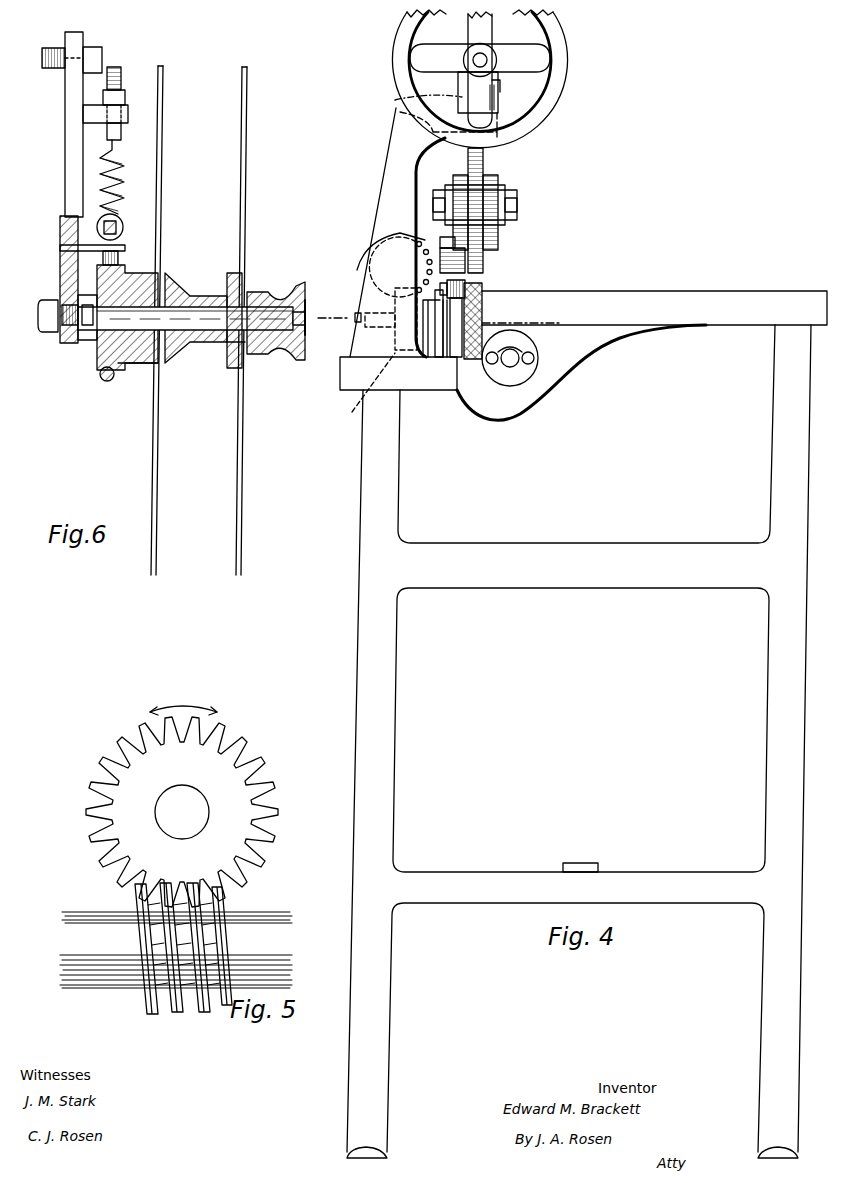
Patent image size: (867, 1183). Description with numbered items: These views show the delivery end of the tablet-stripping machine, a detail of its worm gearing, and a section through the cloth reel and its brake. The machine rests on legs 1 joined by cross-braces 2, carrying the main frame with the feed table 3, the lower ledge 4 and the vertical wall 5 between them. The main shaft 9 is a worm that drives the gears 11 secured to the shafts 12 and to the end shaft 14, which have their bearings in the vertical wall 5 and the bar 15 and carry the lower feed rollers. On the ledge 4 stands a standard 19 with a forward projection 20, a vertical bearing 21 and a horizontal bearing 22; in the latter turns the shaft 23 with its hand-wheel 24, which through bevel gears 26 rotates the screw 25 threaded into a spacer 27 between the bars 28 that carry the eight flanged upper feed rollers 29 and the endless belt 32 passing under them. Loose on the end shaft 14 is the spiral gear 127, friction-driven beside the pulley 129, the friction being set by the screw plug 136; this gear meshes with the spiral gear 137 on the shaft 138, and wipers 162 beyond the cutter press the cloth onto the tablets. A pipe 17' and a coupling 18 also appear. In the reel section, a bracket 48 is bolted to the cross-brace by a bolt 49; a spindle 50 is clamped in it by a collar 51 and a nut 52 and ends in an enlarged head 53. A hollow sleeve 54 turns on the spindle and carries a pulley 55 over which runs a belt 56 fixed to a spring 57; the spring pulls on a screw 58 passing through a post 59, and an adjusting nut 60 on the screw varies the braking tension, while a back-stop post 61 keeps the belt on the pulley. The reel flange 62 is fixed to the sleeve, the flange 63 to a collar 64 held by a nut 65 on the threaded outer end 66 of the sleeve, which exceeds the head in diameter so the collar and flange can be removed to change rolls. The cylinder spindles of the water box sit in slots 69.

In FIG. 4, the legs 1 is at (579, 741).
In FIG. 4, the cross-braces 2 is at (581, 738).
In FIG. 4, the feed table 3 is at (654, 298).
In FIG. 4, the ledge 4 is at (346, 357).
In FIG. 4, the vertical wall 5 is at (484, 296).
In FIG. 4, the main shaft 9 is at (518, 365).
In FIG. 5, the gears 11 is at (255, 870).
In FIG. 5, the shafts 12 is at (209, 818).
In FIG. 4, the end shaft 14 is at (440, 358).
In FIG. 4, the bar 15 is at (457, 360).
In FIG. 4, the pipe 17' is at (460, 315).
In FIG. 4, the coupling 18 is at (480, 285).
In FIG. 4, the standards 19 is at (375, 192).
In FIG. 4, the forward projection 20 is at (440, 97).
In FIG. 4, the vertical bearing 21 is at (498, 104).
In FIG. 4, the horizontal bearing 22 is at (462, 82).
In FIG. 4, the shaft 23 is at (488, 54).
In FIG. 4, the hand-wheel 24 is at (567, 60).
In FIG. 4, the screws 25 is at (486, 165).
In FIG. 4, the bevel gears 26 is at (515, 88).
In FIG. 4, the spacers 27 is at (475, 204).
In FIG. 4, the bars 28 is at (458, 178).
In FIG. 4, the upper feed rollers 29 is at (467, 262).
In FIG. 4, the endless belt 32 is at (470, 285).
In FIG. 6, the bracket 48 is at (62, 182).
In FIG. 6, the bolt 49 is at (103, 50).
In FIG. 6, the spindle 50 is at (202, 333).
In FIG. 6, the collar 51 is at (82, 340).
In FIG. 6, the nut 52 is at (47, 336).
In FIG. 6, the head 53 is at (307, 345).
In FIG. 6, the hollow sleeve 54 is at (215, 362).
In FIG. 6, the pulley 55 is at (124, 372).
In FIG. 6, the belt 56 is at (104, 382).
In FIG. 6, the spring 57 is at (125, 182).
In FIG. 6, the screw 58 is at (123, 134).
In FIG. 6, the post 59 is at (130, 114).
In FIG. 6, the adjusting nut 60 is at (126, 97).
In FIG. 6, the back-stop post 61 is at (128, 252).
In FIG. 6, the flange 62 is at (166, 320).
In FIG. 6, the flange 63 is at (248, 321).
In FIG. 6, the collar 64 is at (247, 360).
In FIG. 6, the nut 65 is at (300, 283).
In FIG. 6, the threaded outer end 66 is at (283, 350).
In FIG. 5, the slots 69 is at (62, 992).
In FIG. 4, the spiral gear 127 is at (355, 394).
In FIG. 4, the pulley 129 is at (435, 360).
In FIG. 4, the screw plug 136 is at (360, 313).
In FIG. 4, the spiral gear 137 is at (395, 235).
In FIG. 4, the shaft 138 is at (390, 252).
In FIG. 4, the wipers 162 is at (465, 292).